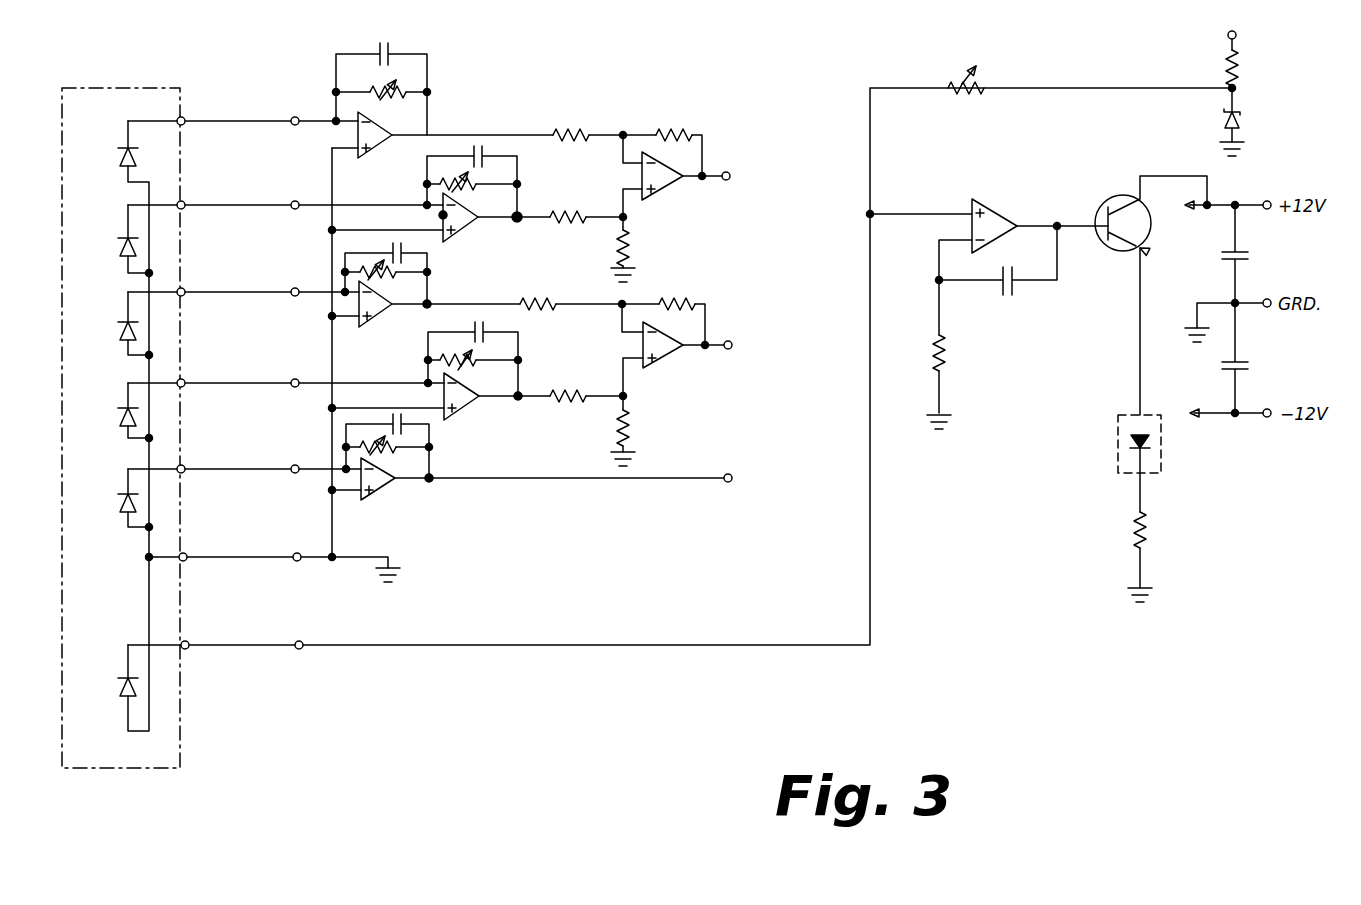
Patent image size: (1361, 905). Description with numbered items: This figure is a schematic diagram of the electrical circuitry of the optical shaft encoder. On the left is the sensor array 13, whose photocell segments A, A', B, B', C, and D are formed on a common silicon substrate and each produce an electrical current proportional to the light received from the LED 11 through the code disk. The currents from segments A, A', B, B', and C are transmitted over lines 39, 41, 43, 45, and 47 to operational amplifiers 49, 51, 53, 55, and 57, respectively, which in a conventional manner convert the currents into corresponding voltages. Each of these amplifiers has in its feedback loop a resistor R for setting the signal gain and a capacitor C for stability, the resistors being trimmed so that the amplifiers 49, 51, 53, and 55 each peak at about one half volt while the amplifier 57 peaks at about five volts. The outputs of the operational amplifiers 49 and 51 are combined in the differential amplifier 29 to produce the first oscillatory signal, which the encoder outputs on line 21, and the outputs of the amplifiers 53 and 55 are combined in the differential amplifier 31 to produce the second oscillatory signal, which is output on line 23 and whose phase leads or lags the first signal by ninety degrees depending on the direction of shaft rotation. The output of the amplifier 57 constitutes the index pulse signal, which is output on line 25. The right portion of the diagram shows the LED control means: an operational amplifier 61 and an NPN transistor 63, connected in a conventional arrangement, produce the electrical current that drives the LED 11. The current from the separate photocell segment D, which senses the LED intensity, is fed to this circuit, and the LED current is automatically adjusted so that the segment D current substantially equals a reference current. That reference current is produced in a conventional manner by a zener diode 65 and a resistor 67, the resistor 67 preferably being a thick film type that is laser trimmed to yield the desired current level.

The LED 11 is at (1168, 461).
The sensor array 13 is at (172, 736).
The line 21 is at (701, 181).
The line 23 is at (704, 349).
The line 25 is at (650, 480).
The differential amplifier 29 is at (657, 203).
The differential amplifier 31 is at (657, 372).
The line 39 is at (253, 98).
The line 41 is at (253, 182).
The line 43 is at (253, 268).
The line 45 is at (255, 359).
The line 47 is at (261, 445).
The operational amplifier 49 is at (377, 158).
The operational amplifier 51 is at (462, 232).
The operational amplifier 53 is at (375, 327).
The operational amplifier 55 is at (465, 410).
The operational amplifier 57 is at (382, 500).
The operational amplifier 61 is at (1000, 206).
The NPN transistor 63 is at (1103, 207).
The zener diode 65 is at (1248, 118).
The resistor 67 is at (969, 97).